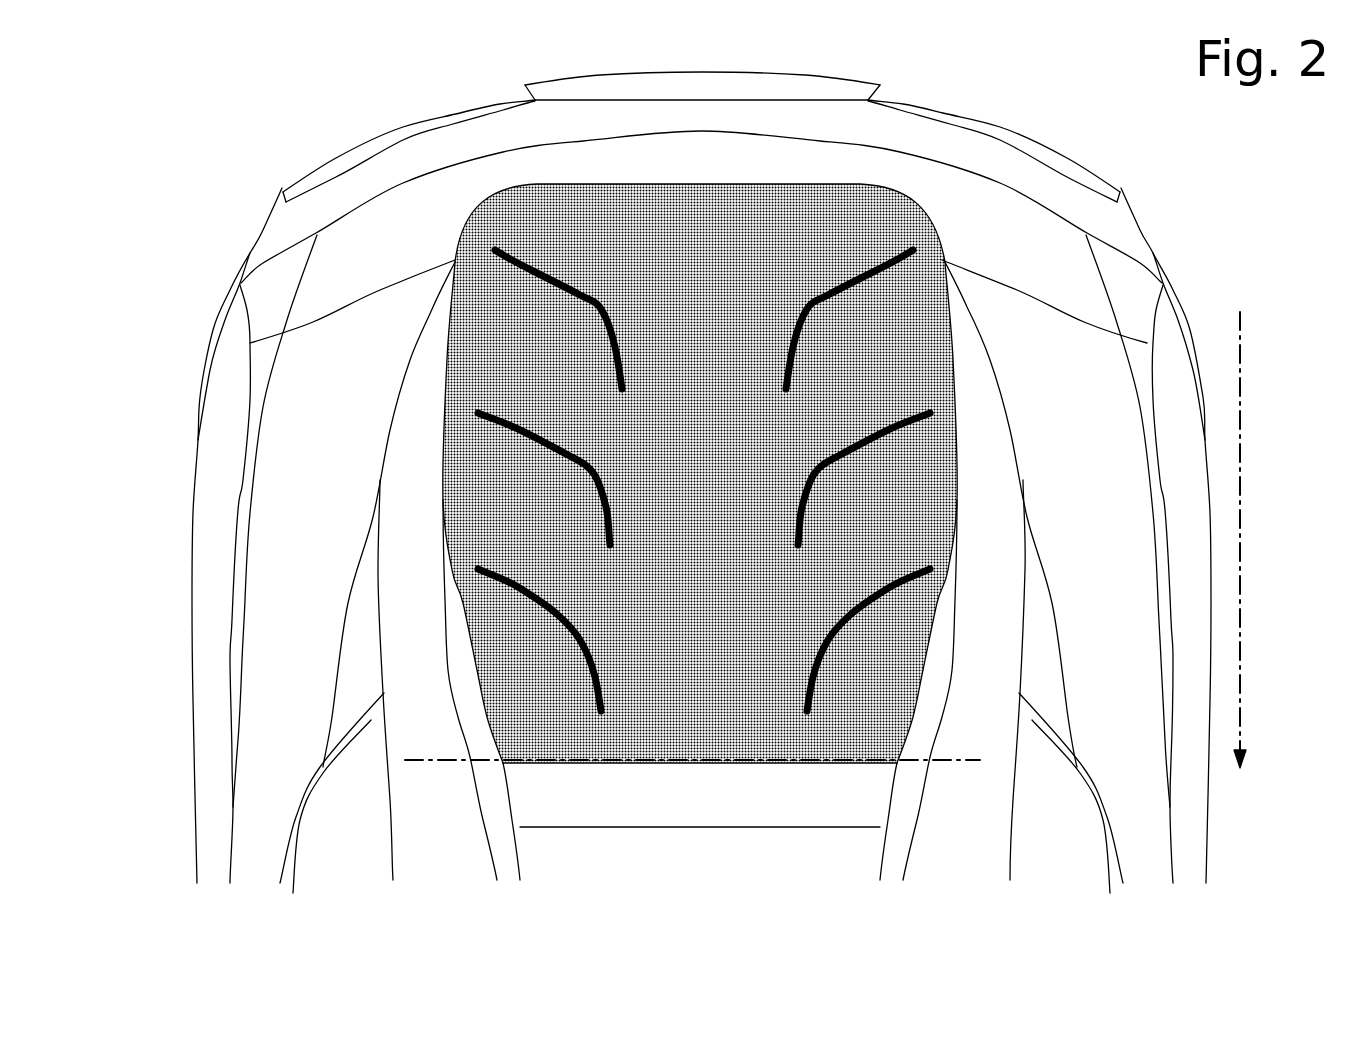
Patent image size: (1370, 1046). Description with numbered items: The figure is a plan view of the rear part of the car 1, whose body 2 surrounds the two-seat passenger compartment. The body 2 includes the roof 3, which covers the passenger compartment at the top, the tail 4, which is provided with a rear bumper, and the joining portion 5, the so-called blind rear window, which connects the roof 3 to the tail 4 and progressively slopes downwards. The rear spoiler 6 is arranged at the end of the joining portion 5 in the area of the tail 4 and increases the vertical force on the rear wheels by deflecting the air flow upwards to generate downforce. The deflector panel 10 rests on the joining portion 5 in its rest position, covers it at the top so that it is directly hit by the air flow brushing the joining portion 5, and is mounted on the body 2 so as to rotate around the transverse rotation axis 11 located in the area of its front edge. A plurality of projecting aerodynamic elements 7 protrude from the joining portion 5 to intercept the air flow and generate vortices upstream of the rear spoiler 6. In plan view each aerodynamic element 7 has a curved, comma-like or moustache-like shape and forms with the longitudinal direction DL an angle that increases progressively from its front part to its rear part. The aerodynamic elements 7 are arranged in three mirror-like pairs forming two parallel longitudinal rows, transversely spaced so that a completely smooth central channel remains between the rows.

The car 1 is at (199, 109).
The body 2 is at (1243, 194).
The roof 3 is at (688, 850).
The tail 4 is at (603, 92).
The joining portion 5 is at (523, 520).
The rear spoiler 6 is at (950, 150).
The projecting aerodynamic elements 7 is at (805, 292).
The deflector panel 10 is at (700, 250).
The transverse rotation axis 11 is at (438, 770).
The longitudinal direction DL is at (1252, 672).